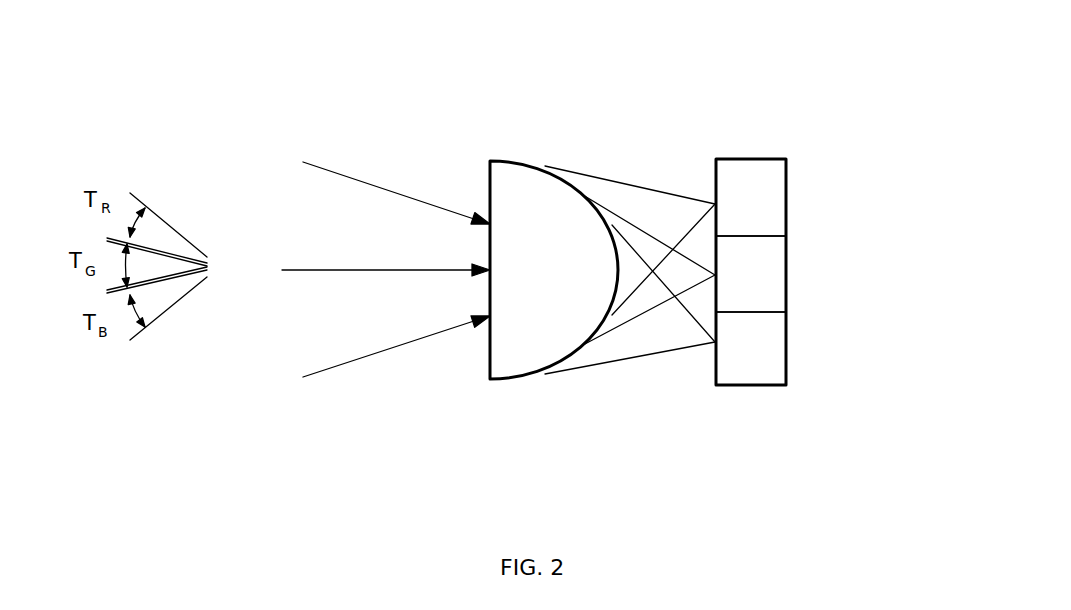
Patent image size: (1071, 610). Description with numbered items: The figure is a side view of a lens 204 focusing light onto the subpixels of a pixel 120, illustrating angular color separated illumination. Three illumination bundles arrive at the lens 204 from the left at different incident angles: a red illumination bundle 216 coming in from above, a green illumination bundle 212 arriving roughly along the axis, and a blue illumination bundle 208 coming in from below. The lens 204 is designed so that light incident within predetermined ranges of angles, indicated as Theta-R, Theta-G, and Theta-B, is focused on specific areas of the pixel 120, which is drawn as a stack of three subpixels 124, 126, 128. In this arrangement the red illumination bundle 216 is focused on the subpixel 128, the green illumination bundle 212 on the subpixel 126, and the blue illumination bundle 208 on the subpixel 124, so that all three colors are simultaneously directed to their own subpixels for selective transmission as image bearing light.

The pixel 120 is at (808, 132).
The subpixel 124 is at (786, 202).
The subpixel 126 is at (786, 273).
The subpixel 128 is at (786, 345).
The lens 204 is at (518, 380).
The blue illumination bundle 208 is at (323, 372).
The green illumination bundle 212 is at (358, 270).
The red illumination bundle 216 is at (335, 170).